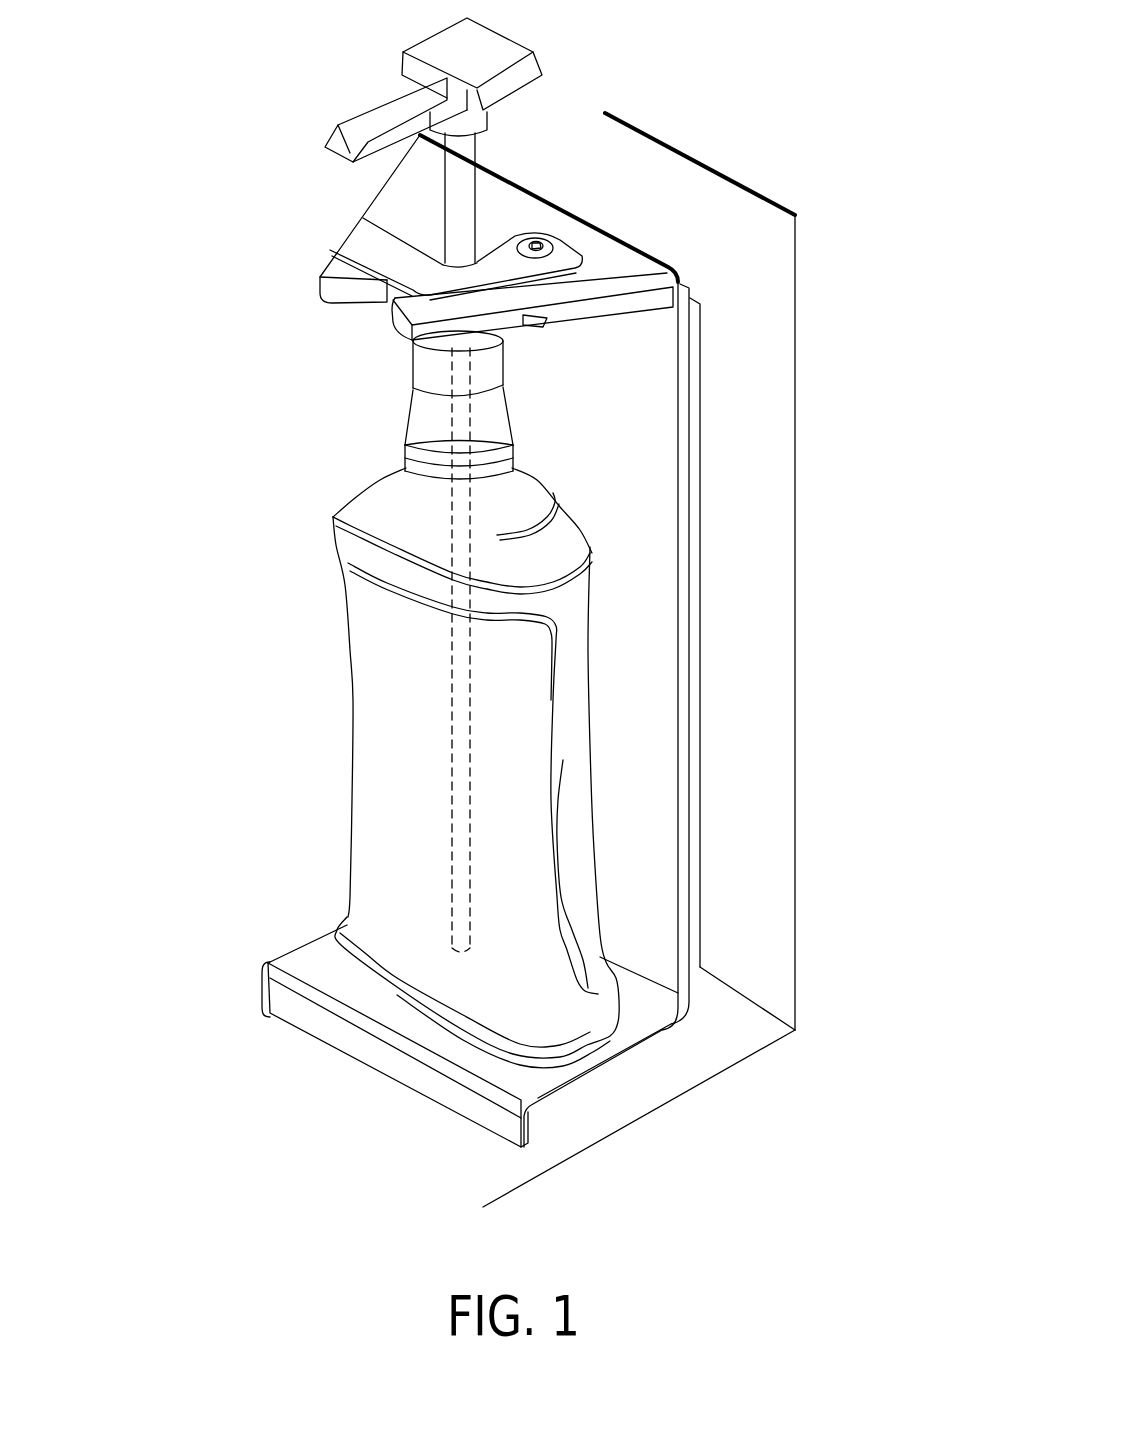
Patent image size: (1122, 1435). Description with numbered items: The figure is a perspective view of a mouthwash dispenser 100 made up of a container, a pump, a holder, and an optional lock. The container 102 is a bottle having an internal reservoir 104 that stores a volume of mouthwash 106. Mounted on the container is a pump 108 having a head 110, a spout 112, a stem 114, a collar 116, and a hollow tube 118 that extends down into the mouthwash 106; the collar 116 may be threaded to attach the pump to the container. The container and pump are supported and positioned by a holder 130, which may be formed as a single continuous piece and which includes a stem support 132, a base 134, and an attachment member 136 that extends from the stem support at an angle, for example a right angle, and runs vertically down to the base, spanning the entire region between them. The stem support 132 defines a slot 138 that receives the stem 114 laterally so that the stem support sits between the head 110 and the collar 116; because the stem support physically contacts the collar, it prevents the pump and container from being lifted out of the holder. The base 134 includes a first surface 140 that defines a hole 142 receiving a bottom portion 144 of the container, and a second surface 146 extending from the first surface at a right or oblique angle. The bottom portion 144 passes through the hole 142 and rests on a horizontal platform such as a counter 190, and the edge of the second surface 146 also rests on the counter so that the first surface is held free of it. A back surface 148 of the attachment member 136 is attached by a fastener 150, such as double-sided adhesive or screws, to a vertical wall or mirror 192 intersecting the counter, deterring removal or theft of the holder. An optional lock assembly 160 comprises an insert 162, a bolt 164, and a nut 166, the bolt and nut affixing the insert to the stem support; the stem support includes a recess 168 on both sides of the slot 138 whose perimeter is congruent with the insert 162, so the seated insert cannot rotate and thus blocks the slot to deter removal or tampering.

The mouthwash dispenser 100 is at (118, 178).
The container 102 is at (480, 768).
The internal reservoir 104 is at (385, 725).
The mouthwash 106 is at (385, 860).
The pump 108 is at (426, 476).
The head 110 is at (460, 53).
The spout 112 is at (338, 137).
The stem 114 is at (463, 193).
The collar 116 is at (430, 360).
The hollow tube 118 is at (450, 523).
The holder 130 is at (754, 444).
The stem support 132 is at (390, 197).
The base 134 is at (262, 993).
The attachment member 136 is at (632, 810).
The slot 138 is at (356, 325).
The first surface 140 is at (318, 1004).
The hole 142 is at (612, 1070).
The bottom portion 144 is at (588, 1085).
The second surface 146 is at (293, 1007).
The back surface 148 is at (699, 563).
The fastener 150 is at (695, 413).
The lock assembly 160 is at (544, 190).
The insert 162 is at (592, 188).
The bolt 164 is at (537, 242).
The nut 166 is at (567, 336).
The recess 168 is at (324, 235).
The counter 190 is at (583, 1113).
The wall or mirror 192 is at (778, 622).